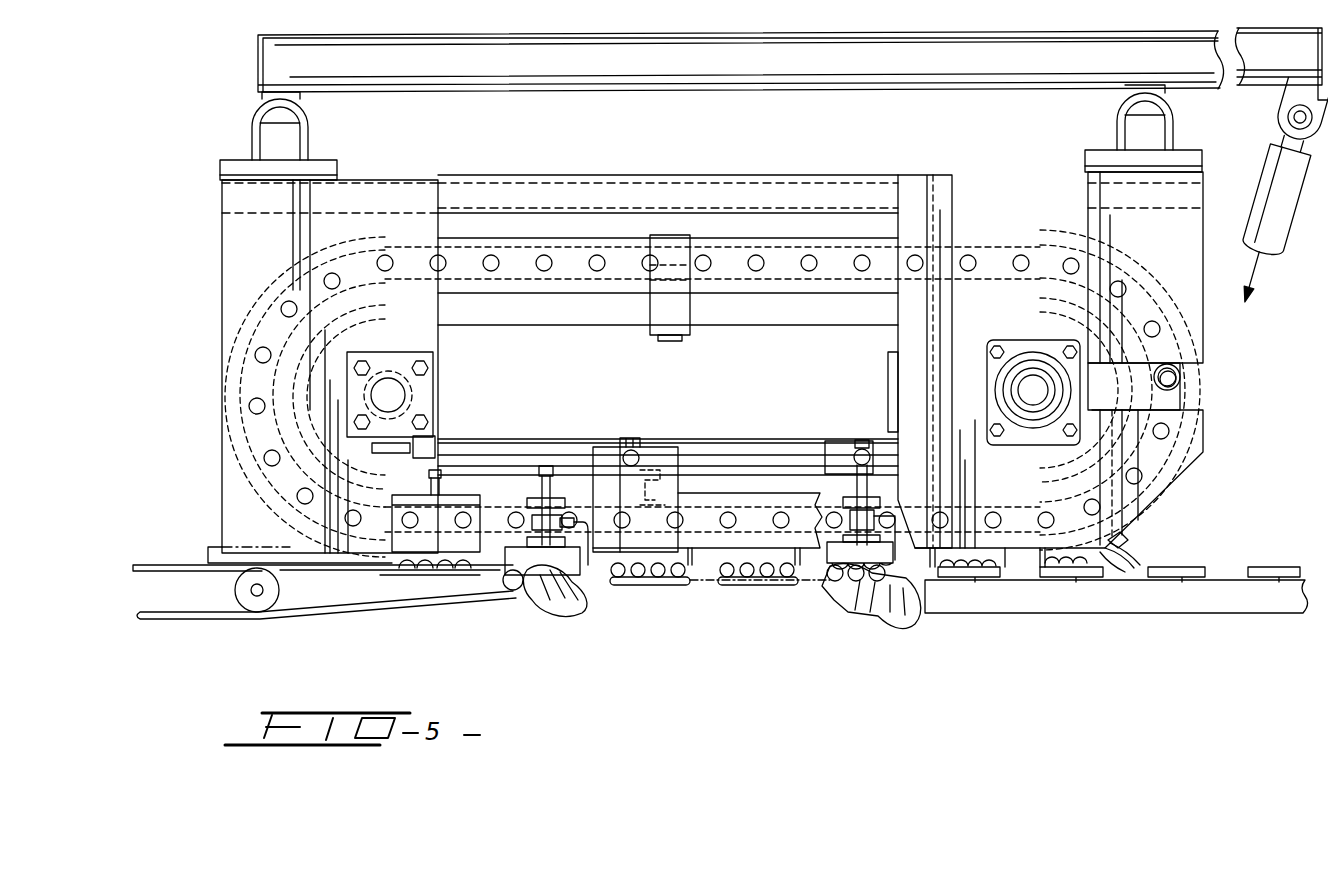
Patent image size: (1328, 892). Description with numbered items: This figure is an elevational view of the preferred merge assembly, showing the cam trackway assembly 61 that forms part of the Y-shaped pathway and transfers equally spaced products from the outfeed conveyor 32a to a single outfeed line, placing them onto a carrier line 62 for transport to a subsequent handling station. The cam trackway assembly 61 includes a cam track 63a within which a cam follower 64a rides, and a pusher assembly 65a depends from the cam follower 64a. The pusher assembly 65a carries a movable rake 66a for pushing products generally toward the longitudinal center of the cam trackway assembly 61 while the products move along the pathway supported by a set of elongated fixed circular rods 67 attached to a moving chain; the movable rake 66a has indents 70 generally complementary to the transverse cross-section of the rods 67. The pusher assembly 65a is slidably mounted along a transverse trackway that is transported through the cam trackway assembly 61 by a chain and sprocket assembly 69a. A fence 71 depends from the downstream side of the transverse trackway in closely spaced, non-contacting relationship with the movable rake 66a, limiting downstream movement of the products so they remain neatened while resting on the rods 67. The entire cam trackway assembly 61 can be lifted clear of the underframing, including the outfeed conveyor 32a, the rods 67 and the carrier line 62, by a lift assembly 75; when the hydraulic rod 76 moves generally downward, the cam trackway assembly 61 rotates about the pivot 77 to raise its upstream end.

The lift assembly 75 is at (1140, 56).
The hydraulic rod 76 is at (1286, 177).
The chain and sprocket assembly 69a is at (763, 248).
The cam track 63a is at (547, 330).
The cam trackway assembly 61 is at (778, 349).
The pivot 77 is at (1030, 388).
The cam follower 64a is at (548, 466).
The pusher assembly 65a is at (525, 512).
The movable rake 66a is at (620, 556).
The elongated fixed circular rods 67 is at (680, 578).
The indents 70 is at (530, 592).
The fence 71 is at (812, 562).
The carrier line 62 is at (1008, 600).
The outfeed conveyor 32a is at (204, 613).